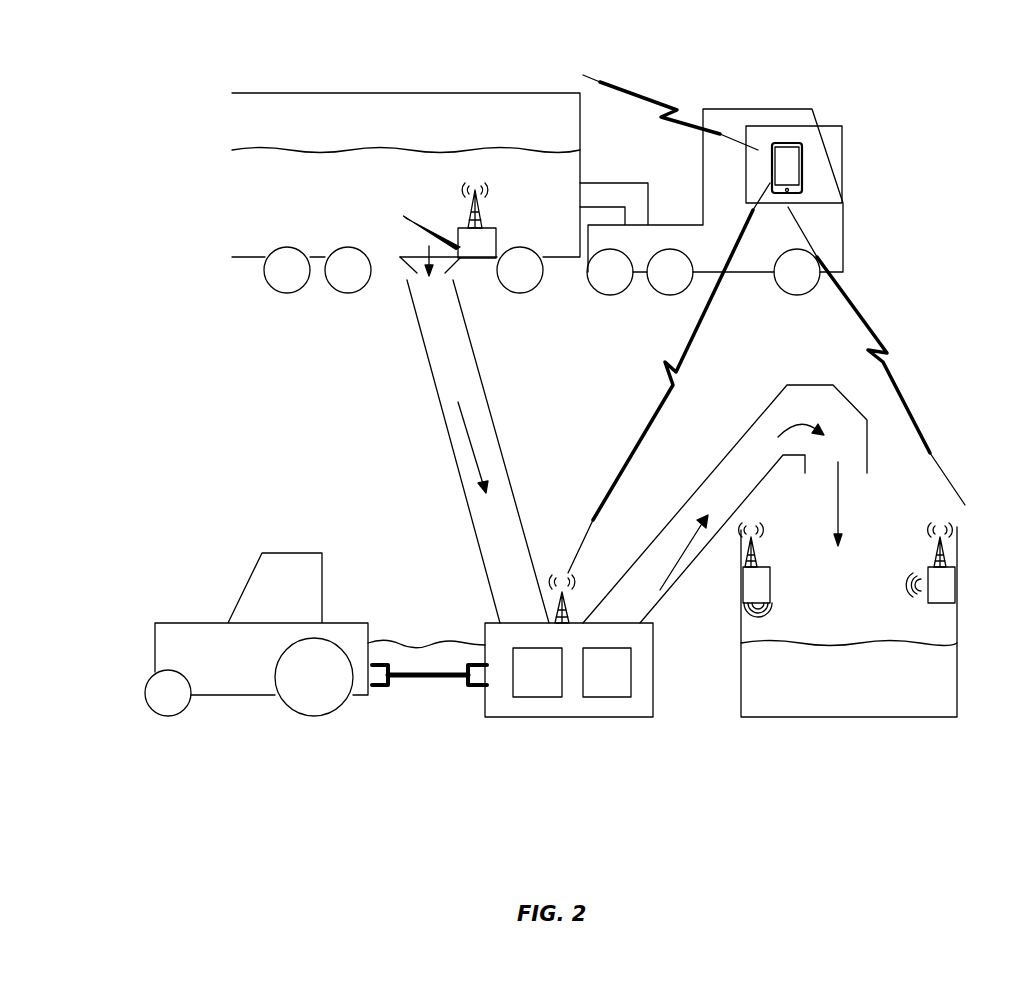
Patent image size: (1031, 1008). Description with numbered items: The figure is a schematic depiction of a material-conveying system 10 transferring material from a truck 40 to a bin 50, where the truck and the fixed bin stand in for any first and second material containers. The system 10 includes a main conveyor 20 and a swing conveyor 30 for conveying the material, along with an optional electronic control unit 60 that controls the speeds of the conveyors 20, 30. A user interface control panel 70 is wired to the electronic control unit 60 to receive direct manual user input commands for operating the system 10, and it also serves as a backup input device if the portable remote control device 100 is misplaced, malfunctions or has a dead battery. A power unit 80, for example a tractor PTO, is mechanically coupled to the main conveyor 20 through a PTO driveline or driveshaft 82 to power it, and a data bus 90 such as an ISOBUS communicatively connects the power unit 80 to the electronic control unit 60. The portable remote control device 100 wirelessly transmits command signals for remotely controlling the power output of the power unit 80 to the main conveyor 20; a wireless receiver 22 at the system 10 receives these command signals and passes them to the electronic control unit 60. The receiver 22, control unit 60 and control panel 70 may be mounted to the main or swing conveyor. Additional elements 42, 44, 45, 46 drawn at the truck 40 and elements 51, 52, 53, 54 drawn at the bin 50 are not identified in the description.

The material-conveying system 10 is at (220, 402).
The main conveyor 20 is at (608, 687).
The wireless receiver 22 is at (570, 593).
The swing conveyor 30 is at (448, 435).
The truck 40 is at (373, 93).
The trailer antenna 42 is at (480, 188).
The trailer sensor 44 is at (477, 243).
The discharge chute 45 is at (417, 262).
The grain flow arrow 46 is at (443, 233).
The bin 50 is at (851, 658).
The bin level sensor 51 is at (750, 588).
The bin sensor antenna 52 is at (760, 566).
The bin sensor 53 is at (953, 585).
The bin sensor antenna 54 is at (933, 560).
The electronic control unit 60 is at (537, 672).
The user interface control panel 70 is at (607, 672).
The power unit 80 is at (190, 622).
The PTO driveline or driveshaft 82 is at (430, 682).
The data bus 90 is at (433, 640).
The portable remote control device 100 is at (803, 162).